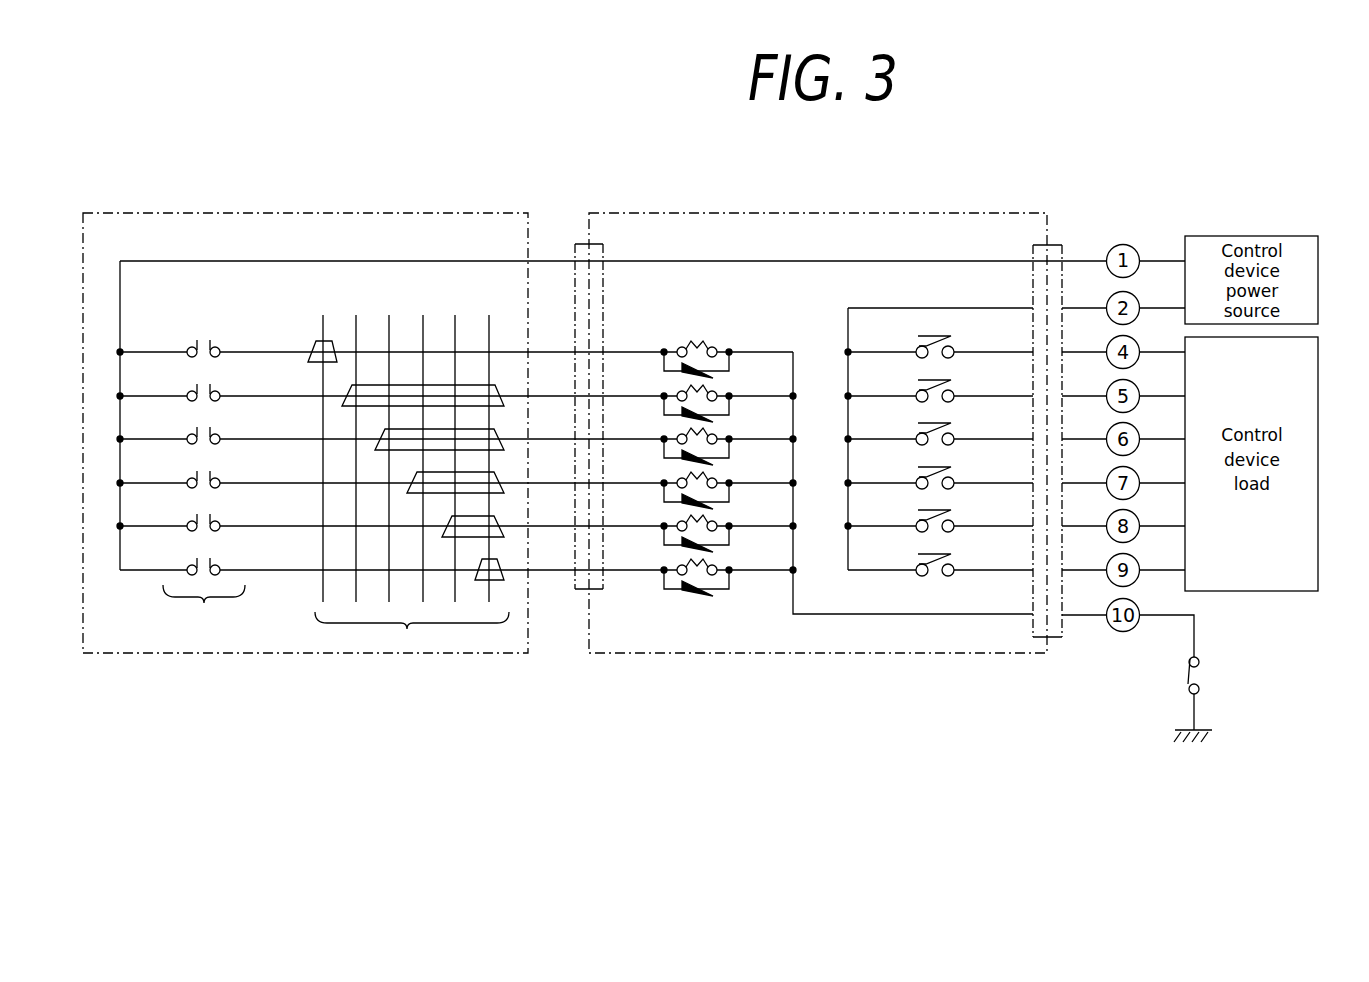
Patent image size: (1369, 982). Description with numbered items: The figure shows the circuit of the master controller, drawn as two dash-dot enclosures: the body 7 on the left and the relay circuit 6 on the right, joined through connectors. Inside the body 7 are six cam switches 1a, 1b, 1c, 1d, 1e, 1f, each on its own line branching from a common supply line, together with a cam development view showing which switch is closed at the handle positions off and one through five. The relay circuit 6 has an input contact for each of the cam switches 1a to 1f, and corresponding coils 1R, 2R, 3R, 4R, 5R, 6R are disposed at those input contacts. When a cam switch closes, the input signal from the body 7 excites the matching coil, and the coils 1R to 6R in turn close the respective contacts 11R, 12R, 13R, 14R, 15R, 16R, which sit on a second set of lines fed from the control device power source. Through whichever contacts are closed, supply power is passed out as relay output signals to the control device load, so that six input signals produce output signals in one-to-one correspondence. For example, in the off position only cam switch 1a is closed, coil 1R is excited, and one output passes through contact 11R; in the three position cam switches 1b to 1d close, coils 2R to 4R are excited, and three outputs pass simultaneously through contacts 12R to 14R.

The body 7 is at (280, 213).
The relay circuit 6 is at (808, 213).
The cam switch 1a is at (217, 343).
The cam switch 1b is at (217, 387).
The cam switch 1c is at (217, 430).
The cam switch 1d is at (217, 474).
The cam switch 1e is at (217, 517).
The cam switch 1f is at (217, 561).
The coil 1R is at (716, 348).
The coil 2R is at (716, 392).
The coil 3R is at (716, 435).
The coil 4R is at (716, 479).
The coil 5R is at (716, 522).
The coil 6R is at (716, 566).
The contact 11R is at (954, 344).
The contact 12R is at (954, 388).
The contact 13R is at (954, 431).
The contact 14R is at (954, 475).
The contact 15R is at (954, 518).
The contact 16R is at (954, 562).